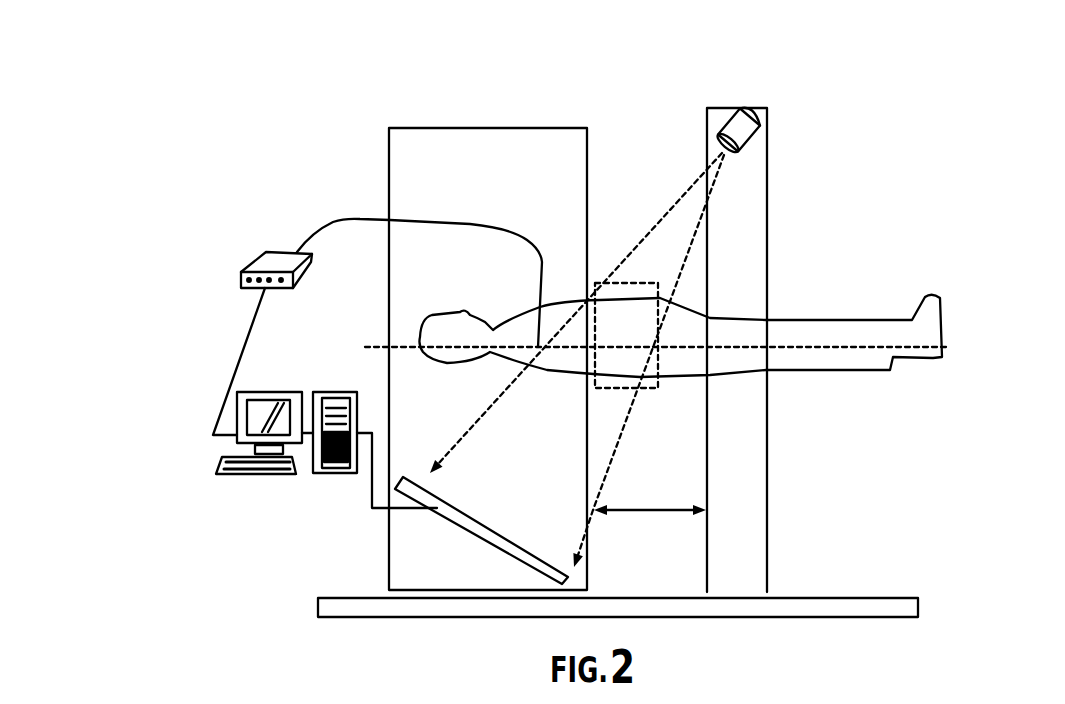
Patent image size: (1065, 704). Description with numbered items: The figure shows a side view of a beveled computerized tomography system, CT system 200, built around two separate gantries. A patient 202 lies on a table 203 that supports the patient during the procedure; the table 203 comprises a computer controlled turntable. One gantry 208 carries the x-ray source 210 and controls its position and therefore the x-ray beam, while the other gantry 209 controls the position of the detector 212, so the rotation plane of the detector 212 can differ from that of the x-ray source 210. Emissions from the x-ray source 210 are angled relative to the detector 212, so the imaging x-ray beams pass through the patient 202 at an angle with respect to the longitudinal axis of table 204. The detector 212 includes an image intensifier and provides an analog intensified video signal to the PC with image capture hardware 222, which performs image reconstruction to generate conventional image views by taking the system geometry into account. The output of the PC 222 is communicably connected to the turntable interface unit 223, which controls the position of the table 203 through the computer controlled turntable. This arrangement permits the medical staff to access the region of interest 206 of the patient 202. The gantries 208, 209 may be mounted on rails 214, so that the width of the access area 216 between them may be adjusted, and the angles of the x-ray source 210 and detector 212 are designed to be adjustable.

The CT system 200 is at (934, 98).
The patient 202 is at (787, 318).
The table 203 is at (700, 348).
The longitudinal axis of table 204 is at (364, 333).
The region of interest 206 is at (621, 278).
The gantry 208 is at (763, 98).
The gantry 209 is at (466, 100).
The x-ray source 210 is at (760, 154).
The detector 212 is at (428, 520).
The rails 214 is at (818, 589).
The access area 216 is at (650, 524).
The PC with image capture hardware 222 is at (322, 392).
The turntable interface unit 223 is at (275, 253).